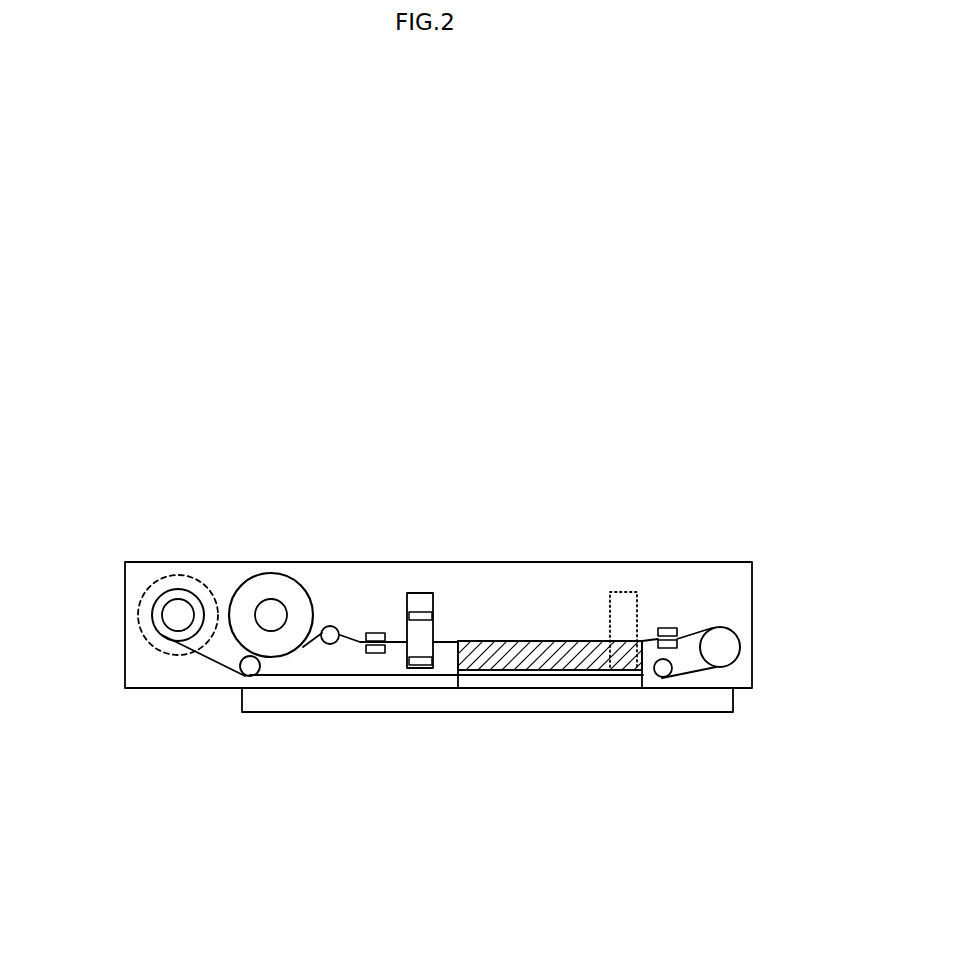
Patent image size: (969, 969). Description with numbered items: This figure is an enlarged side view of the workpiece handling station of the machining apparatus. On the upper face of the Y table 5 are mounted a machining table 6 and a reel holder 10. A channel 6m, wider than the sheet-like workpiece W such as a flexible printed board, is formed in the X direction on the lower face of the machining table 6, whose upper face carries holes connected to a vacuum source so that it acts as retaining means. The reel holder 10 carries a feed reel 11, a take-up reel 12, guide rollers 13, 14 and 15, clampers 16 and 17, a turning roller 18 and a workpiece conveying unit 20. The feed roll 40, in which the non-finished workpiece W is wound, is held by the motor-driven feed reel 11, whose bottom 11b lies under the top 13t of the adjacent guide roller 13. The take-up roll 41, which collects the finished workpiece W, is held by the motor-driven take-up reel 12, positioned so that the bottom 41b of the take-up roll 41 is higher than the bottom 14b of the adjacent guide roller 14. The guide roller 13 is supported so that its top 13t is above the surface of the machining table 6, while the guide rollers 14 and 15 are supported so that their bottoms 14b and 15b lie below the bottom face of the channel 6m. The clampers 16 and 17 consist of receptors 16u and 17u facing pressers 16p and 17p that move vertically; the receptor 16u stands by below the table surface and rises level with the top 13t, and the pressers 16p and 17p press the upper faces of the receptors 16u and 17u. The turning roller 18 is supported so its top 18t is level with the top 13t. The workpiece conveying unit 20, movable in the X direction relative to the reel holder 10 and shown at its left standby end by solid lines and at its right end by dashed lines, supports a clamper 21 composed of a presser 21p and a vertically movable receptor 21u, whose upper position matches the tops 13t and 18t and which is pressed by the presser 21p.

The Y table 5 is at (432, 713).
The machining table 6 is at (537, 640).
The channel 6m is at (557, 675).
The reel holder 10 is at (124, 630).
The feed reel 11 is at (281, 600).
The bottom of the feed reel 11b is at (282, 657).
The take-up reel 12 is at (178, 598).
The guide roller 13 is at (332, 645).
The top of the guide roller 13t is at (326, 627).
The guide roller 14 is at (242, 660).
The bottom of the guide roller 14b is at (243, 675).
The guide roller 15 is at (673, 673).
The bottom of the guide roller 15b is at (662, 677).
The clamper 16 is at (418, 542).
The presser 16p is at (375, 633).
The receptor 16u is at (366, 650).
The clamper 17 is at (763, 547).
The presser 17p is at (670, 628).
The receptor 17u is at (678, 640).
The turning roller 18 is at (740, 647).
The top of the turning roller 18t is at (722, 628).
The workpiece conveying unit 20 is at (623, 602).
The clamper 21 is at (572, 534).
The presser 21p is at (433, 612).
The receptor 21u is at (415, 660).
The feed roll 40 is at (253, 583).
The take-up roll 41 is at (155, 588).
The bottom of the take-up roll 41b is at (170, 655).
The workpiece W is at (204, 658).